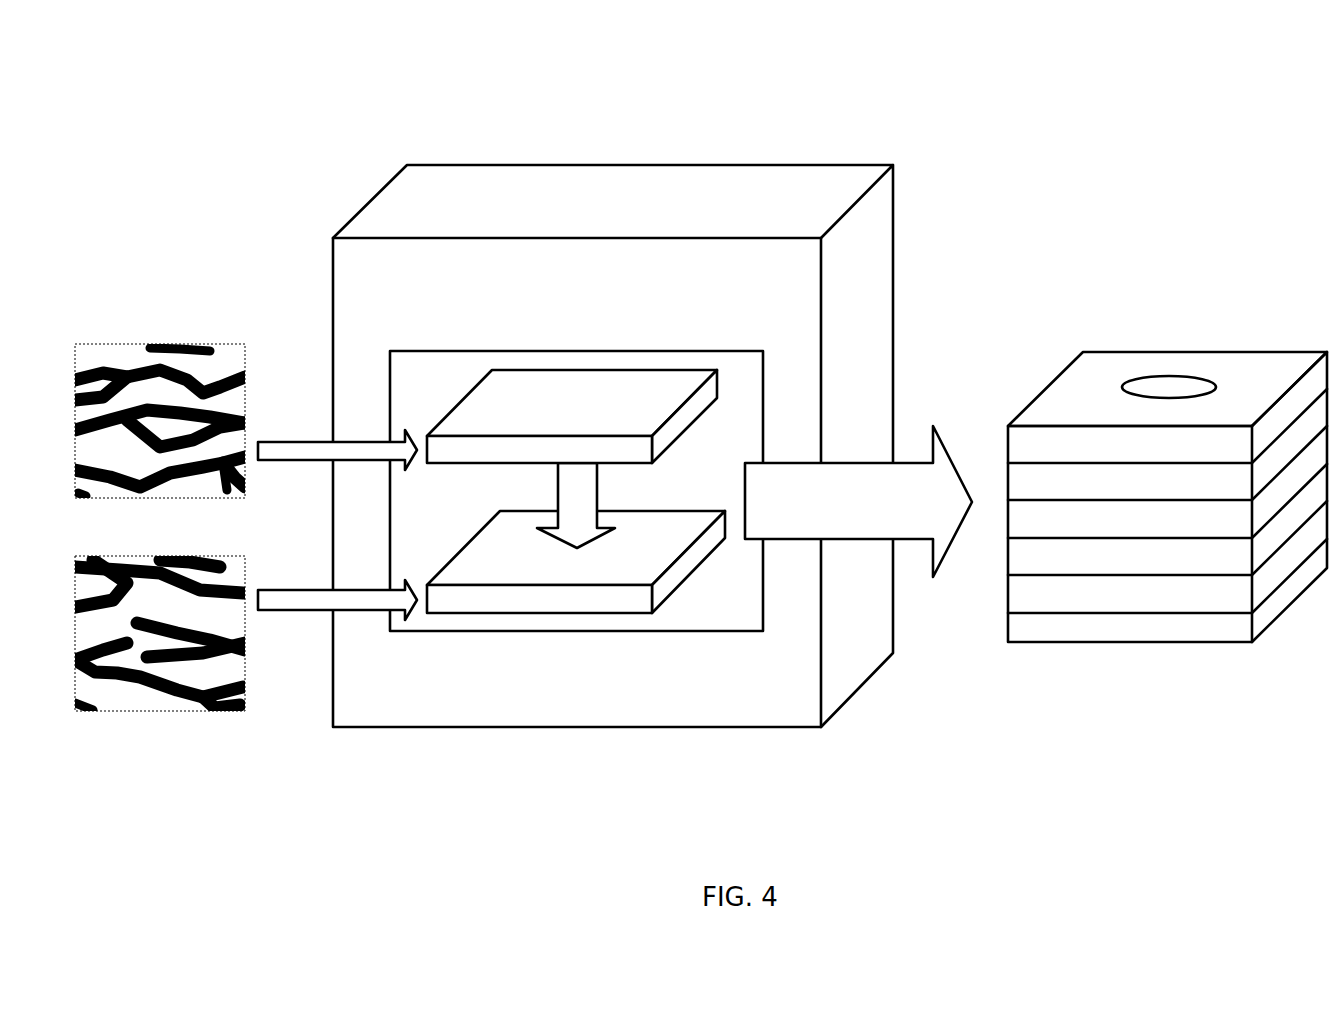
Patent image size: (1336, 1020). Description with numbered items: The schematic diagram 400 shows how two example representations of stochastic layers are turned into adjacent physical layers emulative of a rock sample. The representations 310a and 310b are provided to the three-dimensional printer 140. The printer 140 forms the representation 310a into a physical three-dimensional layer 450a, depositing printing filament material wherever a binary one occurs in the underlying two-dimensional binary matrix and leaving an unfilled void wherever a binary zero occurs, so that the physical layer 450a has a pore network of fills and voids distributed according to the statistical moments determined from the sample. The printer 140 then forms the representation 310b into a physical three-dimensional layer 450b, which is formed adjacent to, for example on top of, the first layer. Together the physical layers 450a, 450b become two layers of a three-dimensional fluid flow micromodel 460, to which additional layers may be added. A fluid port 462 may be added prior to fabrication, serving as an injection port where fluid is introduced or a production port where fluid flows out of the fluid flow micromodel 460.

The schematic diagram 400 is at (163, 88).
The representation 310a is at (128, 338).
The representation 310b is at (145, 713).
The 3D printer 140 is at (613, 446).
The physical 3D layer 450a is at (538, 613).
The physical 3D layer 450b is at (468, 388).
The 3D fluid flow micromodel 460 is at (1139, 472).
The fluid port 462 is at (1177, 377).